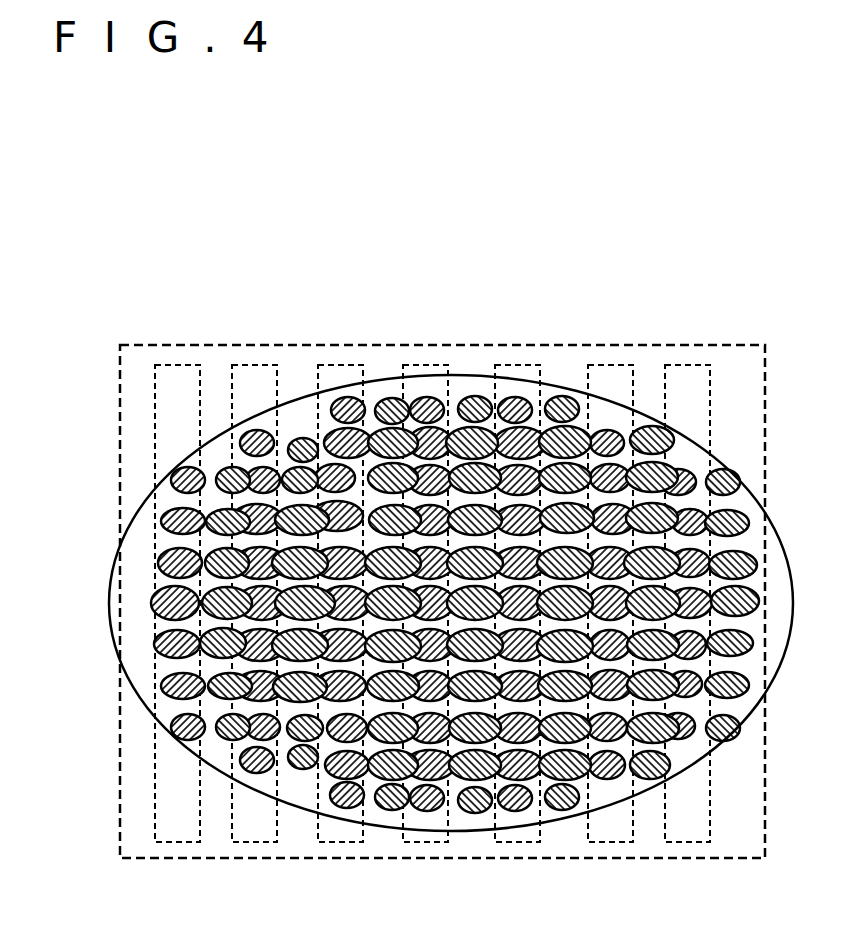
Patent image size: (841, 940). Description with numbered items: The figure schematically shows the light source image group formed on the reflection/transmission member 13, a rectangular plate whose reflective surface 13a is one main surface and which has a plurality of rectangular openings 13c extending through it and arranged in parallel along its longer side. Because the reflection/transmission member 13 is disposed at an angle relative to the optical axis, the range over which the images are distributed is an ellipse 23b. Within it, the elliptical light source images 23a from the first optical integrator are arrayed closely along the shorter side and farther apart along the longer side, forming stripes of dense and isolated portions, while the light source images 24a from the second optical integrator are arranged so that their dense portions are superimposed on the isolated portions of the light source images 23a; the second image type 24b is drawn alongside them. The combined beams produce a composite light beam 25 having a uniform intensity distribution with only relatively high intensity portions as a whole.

The reflection/transmission member 13 is at (393, 601).
The reflective surface 13a is at (132, 757).
The openings 13c is at (175, 843).
The light source images 23a is at (273, 735).
The ellipse 23b is at (167, 728).
The light source images 24a is at (215, 520).
The second dot type 24b is at (313, 476).
The composite light beam 25 is at (468, 830).